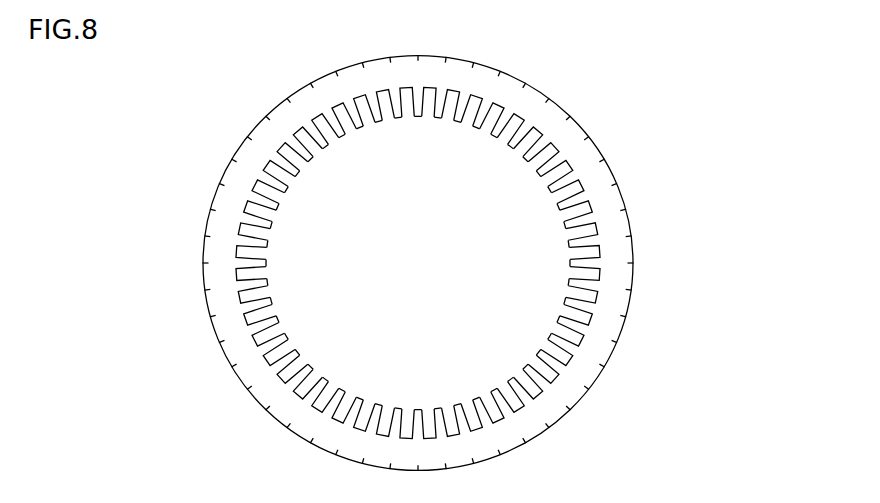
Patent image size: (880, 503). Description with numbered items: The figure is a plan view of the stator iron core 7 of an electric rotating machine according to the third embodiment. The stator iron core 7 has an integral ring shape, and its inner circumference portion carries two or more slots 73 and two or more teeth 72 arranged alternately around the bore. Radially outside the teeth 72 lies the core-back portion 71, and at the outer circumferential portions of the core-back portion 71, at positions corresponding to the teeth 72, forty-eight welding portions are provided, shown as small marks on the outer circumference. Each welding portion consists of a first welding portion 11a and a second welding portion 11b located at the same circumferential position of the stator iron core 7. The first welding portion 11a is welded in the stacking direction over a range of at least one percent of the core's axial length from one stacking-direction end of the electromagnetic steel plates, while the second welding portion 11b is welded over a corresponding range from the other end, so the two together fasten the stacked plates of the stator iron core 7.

The stator iron core 7 is at (568, 140).
The first welding portion 11a is at (627, 215).
The second welding portion 11b is at (627, 215).
The core-back portion 71 is at (613, 297).
The teeth 72 is at (573, 240).
The slots 73 is at (570, 210).